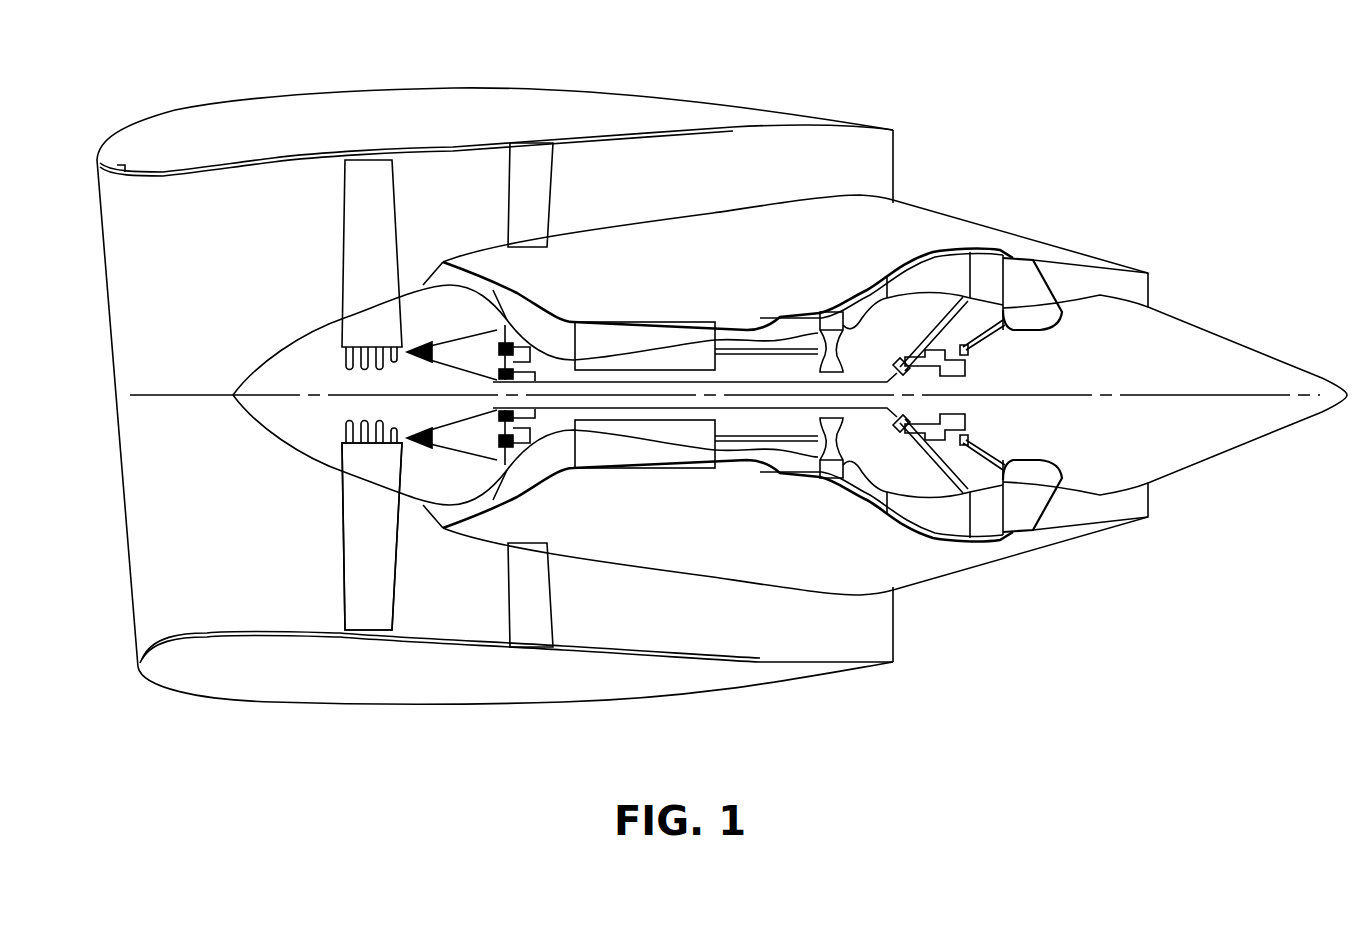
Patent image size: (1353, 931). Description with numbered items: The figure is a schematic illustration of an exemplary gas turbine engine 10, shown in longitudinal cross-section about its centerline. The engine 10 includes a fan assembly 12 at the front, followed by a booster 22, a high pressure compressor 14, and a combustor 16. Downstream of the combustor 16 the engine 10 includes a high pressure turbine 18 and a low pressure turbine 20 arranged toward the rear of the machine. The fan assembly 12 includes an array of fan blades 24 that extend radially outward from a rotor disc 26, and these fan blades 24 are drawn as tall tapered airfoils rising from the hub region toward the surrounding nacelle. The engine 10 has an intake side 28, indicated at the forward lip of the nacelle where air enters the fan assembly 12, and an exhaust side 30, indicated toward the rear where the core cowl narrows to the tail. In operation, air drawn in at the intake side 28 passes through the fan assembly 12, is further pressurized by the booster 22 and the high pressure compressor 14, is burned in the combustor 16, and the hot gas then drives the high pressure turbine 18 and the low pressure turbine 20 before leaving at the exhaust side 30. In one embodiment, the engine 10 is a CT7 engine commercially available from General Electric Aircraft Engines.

The gas turbine engine 10 is at (813, 78).
The fan assembly 12 is at (378, 567).
The high pressure compressor 14 is at (595, 333).
The combustor 16 is at (780, 315).
The high pressure turbine 18 is at (857, 492).
The low pressure turbine 20 is at (917, 278).
The booster 22 is at (481, 278).
The fan blades 24 is at (352, 222).
The rotor disc 26 is at (365, 483).
The intake side 28 is at (87, 178).
The exhaust side 30 is at (940, 168).